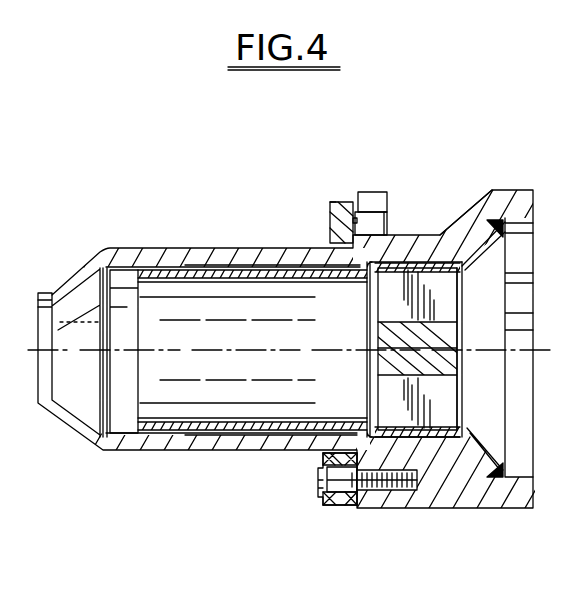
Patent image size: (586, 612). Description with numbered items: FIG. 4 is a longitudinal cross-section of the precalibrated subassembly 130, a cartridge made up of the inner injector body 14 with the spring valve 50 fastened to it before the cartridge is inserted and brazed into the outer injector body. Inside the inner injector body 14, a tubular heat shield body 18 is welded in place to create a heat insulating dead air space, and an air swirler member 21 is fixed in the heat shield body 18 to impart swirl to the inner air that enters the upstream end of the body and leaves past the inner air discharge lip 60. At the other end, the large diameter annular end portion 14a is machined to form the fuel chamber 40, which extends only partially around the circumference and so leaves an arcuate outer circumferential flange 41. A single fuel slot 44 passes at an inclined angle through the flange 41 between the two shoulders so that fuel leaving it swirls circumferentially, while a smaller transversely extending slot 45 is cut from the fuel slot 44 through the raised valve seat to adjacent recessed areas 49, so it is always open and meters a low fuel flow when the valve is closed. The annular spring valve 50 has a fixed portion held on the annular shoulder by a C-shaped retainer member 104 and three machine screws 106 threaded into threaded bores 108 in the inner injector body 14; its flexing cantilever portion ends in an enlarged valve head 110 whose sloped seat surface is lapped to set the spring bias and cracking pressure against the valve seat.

The precalibrated subassembly 130 is at (150, 208).
The inner injector body 14 is at (157, 448).
The large diameter annular end portion 14a is at (523, 195).
The tubular heat shield body 18 is at (165, 262).
The inner air discharge lip 60 is at (38, 305).
The air swirler member 21 is at (443, 292).
The fuel chamber 40 is at (426, 200).
The arcuate outer circumferential flange 41 is at (378, 192).
The fuel slot 44 is at (380, 225).
The transversely extending slot 45 is at (333, 222).
The recessed areas 49 is at (348, 203).
The valve head 110 is at (331, 204).
The spring valve 50 is at (343, 505).
The C-shaped retainer member 104 is at (318, 497).
The machine screws 106 is at (320, 477).
The threaded bores 108 is at (410, 490).